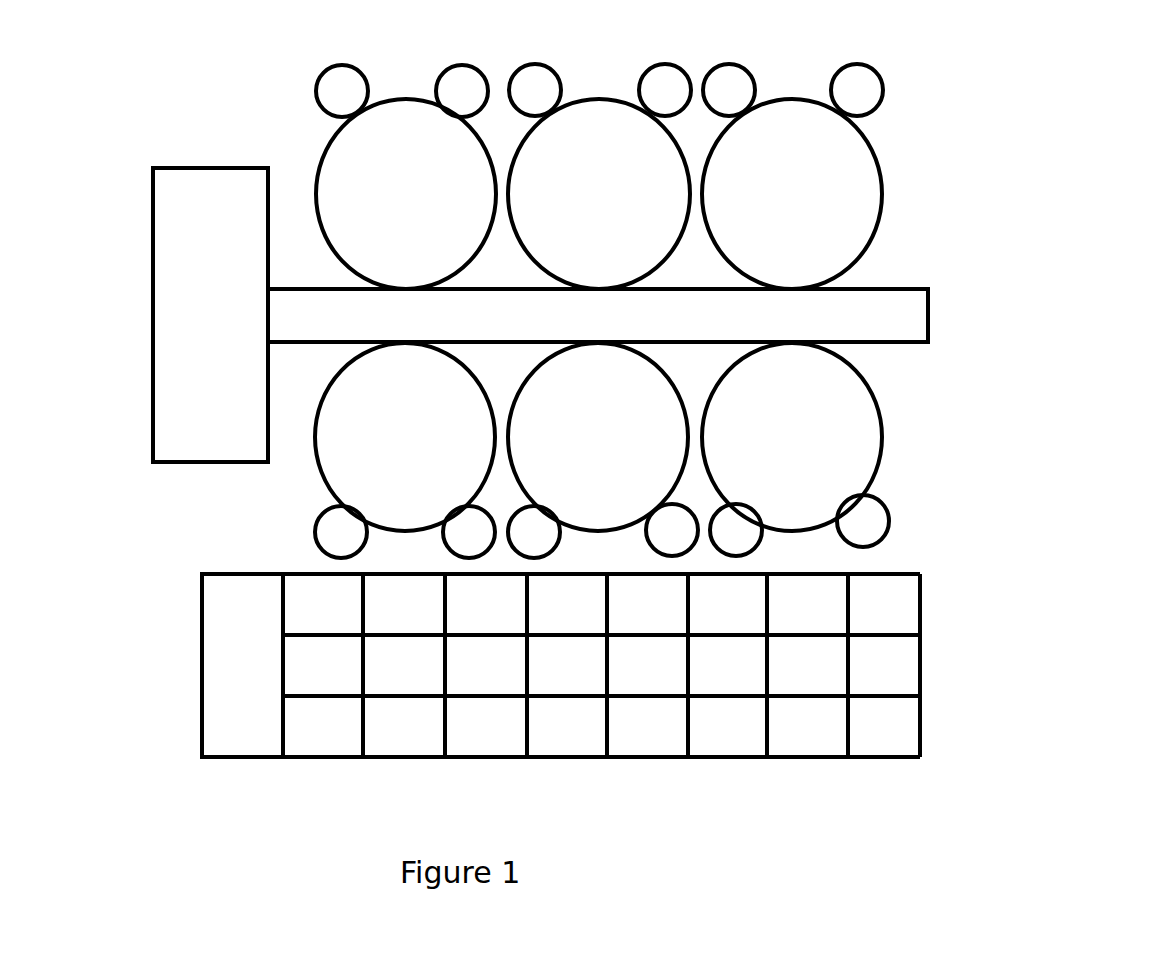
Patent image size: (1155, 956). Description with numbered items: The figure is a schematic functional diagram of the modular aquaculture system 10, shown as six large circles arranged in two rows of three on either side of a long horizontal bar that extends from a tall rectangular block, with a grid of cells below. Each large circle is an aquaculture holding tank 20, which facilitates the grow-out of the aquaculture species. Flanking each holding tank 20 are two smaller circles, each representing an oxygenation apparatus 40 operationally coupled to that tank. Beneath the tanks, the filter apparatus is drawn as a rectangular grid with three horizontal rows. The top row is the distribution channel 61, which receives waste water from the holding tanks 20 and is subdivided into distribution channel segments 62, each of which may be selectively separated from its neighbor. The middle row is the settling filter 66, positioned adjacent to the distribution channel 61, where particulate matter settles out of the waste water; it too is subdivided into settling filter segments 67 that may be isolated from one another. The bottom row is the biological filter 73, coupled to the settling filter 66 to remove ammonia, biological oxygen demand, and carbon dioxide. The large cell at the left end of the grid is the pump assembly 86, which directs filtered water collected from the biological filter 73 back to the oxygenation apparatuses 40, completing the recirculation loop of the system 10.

The modular aquaculture system 10 is at (1044, 350).
The aquaculture holding tank 20 is at (880, 172).
The oxygenation apparatus 40 is at (722, 67).
The distribution channel 61 is at (934, 605).
The distribution channel segment 62 is at (571, 616).
The settling filter 66 is at (934, 667).
The settling filter segment 67 is at (490, 682).
The biological filter 73 is at (934, 725).
The pump assembly 86 is at (242, 665).